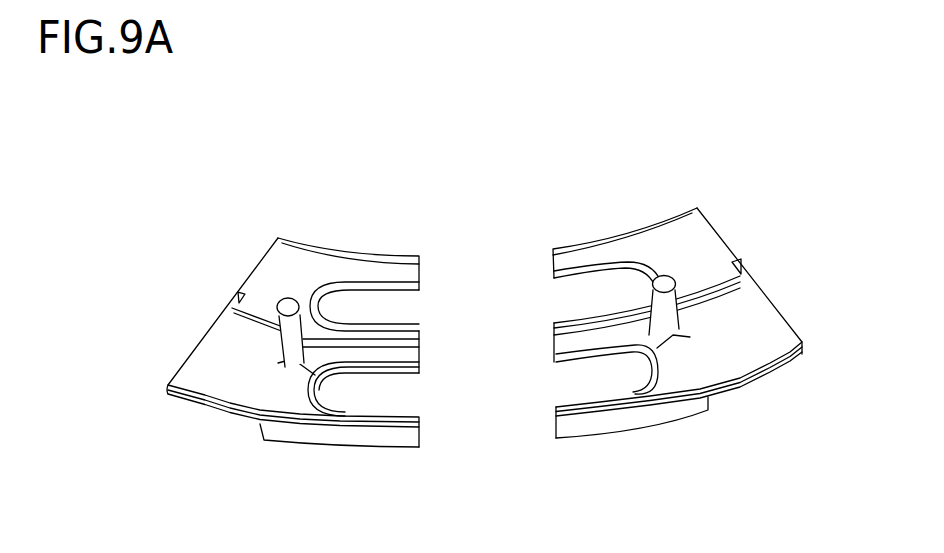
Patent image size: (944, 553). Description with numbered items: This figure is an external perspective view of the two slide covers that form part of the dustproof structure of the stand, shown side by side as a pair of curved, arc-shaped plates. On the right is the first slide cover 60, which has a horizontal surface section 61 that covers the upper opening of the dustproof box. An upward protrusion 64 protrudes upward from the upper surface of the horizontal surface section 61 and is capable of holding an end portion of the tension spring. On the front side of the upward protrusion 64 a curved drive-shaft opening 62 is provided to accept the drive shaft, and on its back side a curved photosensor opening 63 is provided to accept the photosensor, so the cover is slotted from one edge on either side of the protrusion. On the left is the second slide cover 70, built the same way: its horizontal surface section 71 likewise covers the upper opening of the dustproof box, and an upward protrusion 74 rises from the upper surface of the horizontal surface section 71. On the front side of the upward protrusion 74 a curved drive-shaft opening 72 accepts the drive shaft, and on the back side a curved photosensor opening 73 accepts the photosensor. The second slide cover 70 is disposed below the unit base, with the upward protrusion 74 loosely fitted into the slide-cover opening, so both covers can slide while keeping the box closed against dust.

The first slide cover 60 is at (746, 247).
The horizontal surface section 61 is at (758, 323).
The curved drive-shaft opening 62 is at (602, 302).
The curved photosensor opening 63 is at (597, 390).
The upward protrusion 64 is at (665, 278).
The second slide cover 70 is at (208, 320).
The horizontal surface section 71 is at (212, 370).
The curved drive-shaft opening 72 is at (368, 307).
The curved photosensor opening 73 is at (377, 392).
The upward protrusion 74 is at (288, 305).